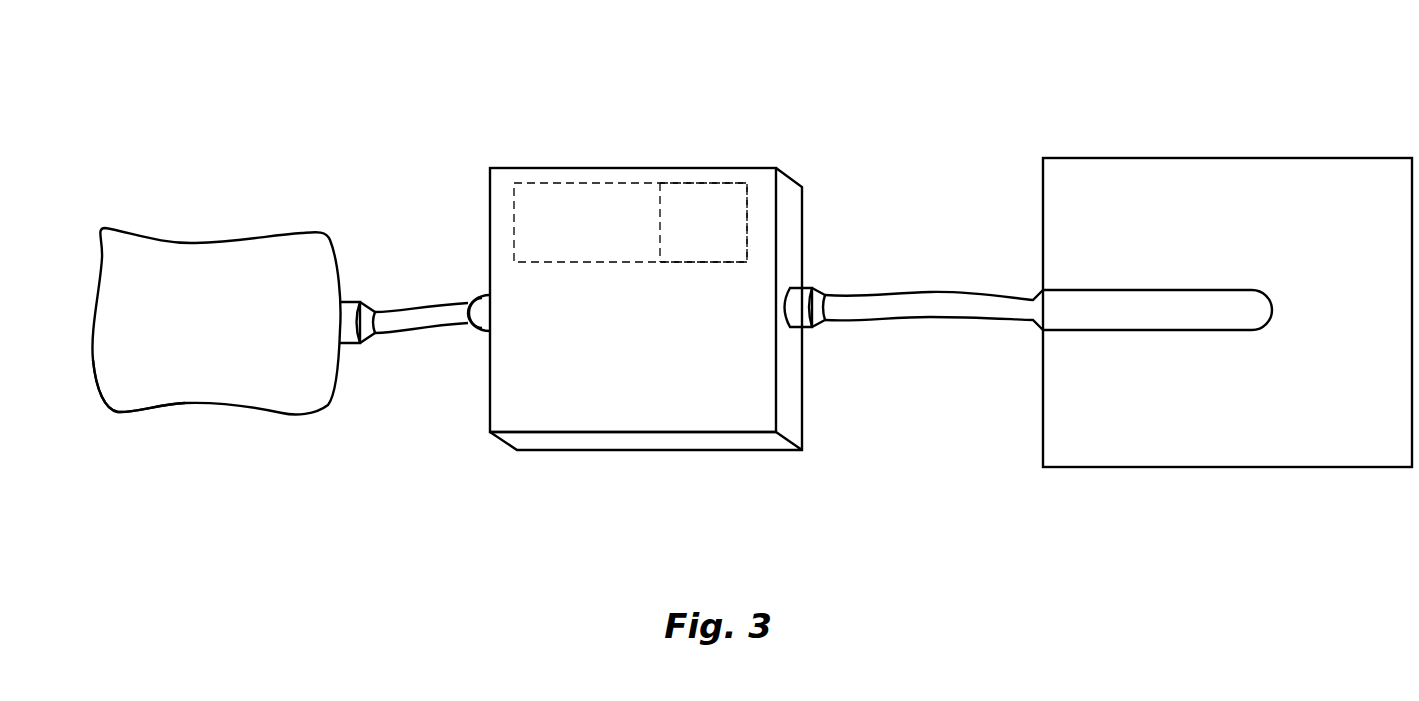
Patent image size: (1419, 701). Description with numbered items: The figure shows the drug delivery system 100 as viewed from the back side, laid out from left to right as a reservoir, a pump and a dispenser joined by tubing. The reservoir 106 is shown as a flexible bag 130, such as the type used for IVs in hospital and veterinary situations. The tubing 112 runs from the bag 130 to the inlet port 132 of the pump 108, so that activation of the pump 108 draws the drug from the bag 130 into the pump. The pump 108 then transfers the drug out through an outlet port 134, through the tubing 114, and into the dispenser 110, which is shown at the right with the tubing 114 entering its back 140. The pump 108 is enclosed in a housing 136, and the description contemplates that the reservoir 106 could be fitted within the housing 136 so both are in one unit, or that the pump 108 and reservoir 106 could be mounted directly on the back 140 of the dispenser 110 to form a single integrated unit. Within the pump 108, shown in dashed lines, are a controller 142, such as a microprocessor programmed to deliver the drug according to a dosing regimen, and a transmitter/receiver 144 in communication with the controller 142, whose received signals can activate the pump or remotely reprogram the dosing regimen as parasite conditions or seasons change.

The drug delivery system 100 is at (444, 96).
The reservoir 106 is at (172, 240).
The flexible bag 130 is at (220, 392).
The tubing 112 is at (413, 320).
The inlet port 132 is at (486, 300).
The pump 108 is at (642, 168).
The controller 142 is at (552, 195).
The transmitter/receiver 144 is at (717, 195).
The housing 136 is at (565, 415).
The outlet port 134 is at (808, 288).
The tubing 114 is at (932, 307).
The dispenser 110 is at (1091, 158).
The back of the dispenser 140 is at (1141, 433).